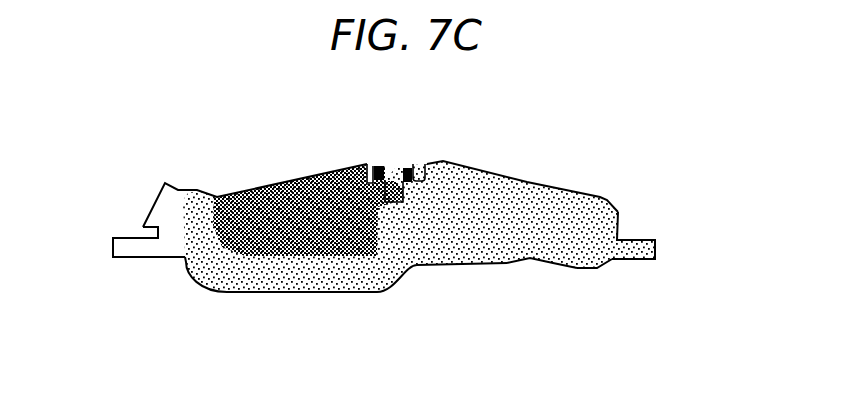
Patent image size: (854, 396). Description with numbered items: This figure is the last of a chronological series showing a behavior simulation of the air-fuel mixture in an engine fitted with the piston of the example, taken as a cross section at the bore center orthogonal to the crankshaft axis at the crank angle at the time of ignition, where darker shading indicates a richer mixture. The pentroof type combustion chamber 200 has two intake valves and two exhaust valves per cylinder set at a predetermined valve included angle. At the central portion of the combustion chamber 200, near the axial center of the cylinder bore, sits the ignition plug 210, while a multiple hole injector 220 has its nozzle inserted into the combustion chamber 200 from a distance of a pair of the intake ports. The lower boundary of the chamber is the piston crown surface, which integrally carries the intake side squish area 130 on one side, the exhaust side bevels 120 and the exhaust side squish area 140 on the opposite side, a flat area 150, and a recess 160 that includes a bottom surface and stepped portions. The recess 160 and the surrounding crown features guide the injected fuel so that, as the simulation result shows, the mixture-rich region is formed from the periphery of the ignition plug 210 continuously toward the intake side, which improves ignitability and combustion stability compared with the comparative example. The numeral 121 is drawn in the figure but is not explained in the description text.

The combustion chamber 200 is at (527, 183).
The ignition plug 210 is at (408, 174).
The multiple hole injector 220 is at (159, 195).
The intake side squish area 130 is at (140, 257).
The recess 160 is at (187, 266).
The flat area 150 is at (458, 266).
The exhaust side bevels 120 is at (553, 264).
The protruding portion 121 is at (597, 269).
The exhaust side squish area 140 is at (628, 259).